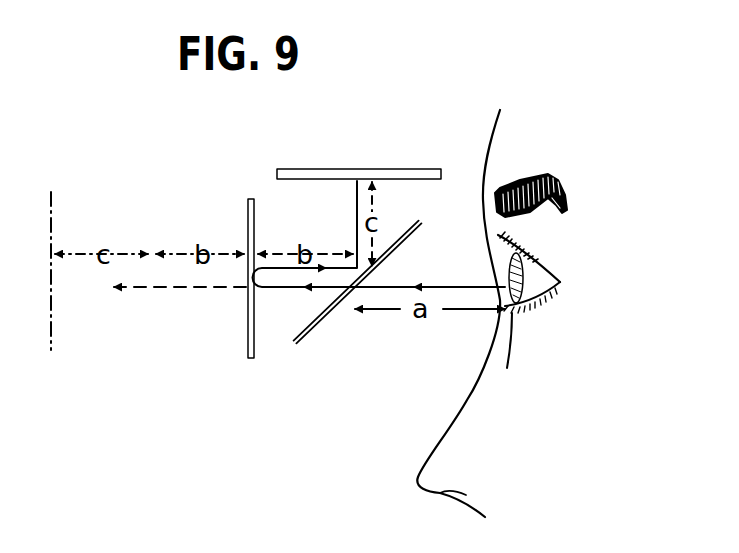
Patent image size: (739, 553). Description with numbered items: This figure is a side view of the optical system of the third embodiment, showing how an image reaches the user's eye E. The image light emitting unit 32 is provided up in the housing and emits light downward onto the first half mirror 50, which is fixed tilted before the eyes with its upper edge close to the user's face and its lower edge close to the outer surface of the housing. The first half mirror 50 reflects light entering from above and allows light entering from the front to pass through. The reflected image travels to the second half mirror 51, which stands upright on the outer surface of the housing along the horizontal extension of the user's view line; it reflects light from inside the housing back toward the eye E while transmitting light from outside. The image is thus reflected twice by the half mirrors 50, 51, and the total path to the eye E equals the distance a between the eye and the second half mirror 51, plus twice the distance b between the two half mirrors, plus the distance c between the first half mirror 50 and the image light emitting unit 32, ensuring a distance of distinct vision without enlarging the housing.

The second half mirror 51 is at (248, 212).
The image light emitting unit 32 is at (337, 167).
The first half mirror 50 is at (305, 337).
The eye E is at (533, 252).